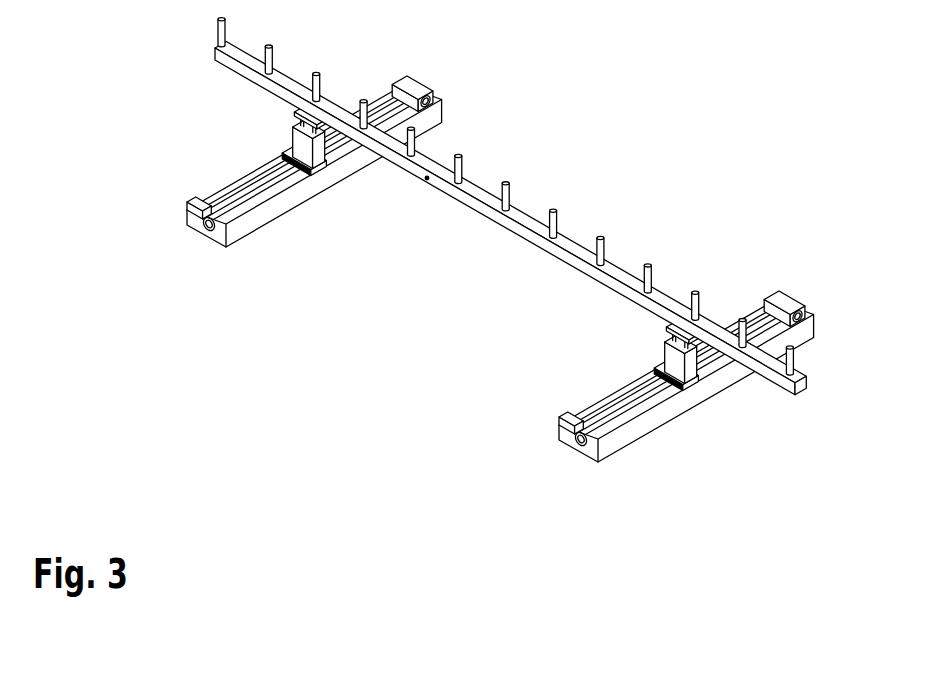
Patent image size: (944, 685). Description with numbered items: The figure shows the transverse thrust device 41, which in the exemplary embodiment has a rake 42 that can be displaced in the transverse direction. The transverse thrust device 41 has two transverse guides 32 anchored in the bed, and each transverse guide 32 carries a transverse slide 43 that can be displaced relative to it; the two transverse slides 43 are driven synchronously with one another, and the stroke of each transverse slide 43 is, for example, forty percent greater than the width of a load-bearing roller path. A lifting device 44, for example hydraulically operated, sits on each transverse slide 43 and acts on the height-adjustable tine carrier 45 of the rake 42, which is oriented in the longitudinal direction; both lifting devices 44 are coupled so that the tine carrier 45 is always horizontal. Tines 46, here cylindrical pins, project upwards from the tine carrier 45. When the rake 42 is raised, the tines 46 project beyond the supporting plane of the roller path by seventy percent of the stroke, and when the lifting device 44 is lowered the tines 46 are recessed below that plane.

The transverse guide 32 is at (589, 448).
The transverse thrust device 41 is at (510, 260).
The rake 42 is at (617, 264).
The transverse slide 43 is at (299, 157).
The lifting device 44 is at (313, 142).
The tine carrier 45 is at (427, 178).
The tine 46 is at (506, 184).